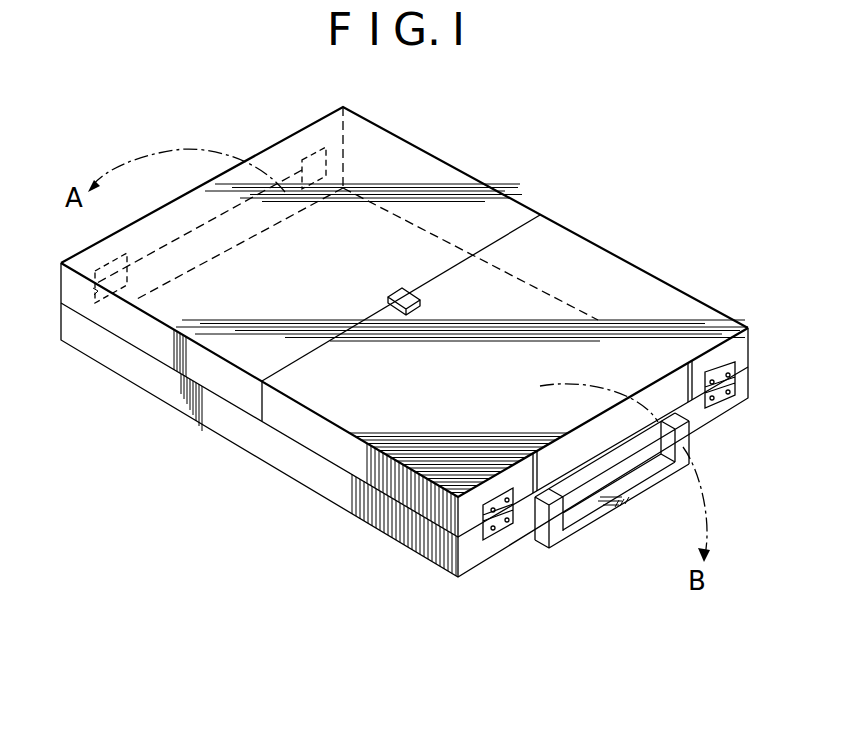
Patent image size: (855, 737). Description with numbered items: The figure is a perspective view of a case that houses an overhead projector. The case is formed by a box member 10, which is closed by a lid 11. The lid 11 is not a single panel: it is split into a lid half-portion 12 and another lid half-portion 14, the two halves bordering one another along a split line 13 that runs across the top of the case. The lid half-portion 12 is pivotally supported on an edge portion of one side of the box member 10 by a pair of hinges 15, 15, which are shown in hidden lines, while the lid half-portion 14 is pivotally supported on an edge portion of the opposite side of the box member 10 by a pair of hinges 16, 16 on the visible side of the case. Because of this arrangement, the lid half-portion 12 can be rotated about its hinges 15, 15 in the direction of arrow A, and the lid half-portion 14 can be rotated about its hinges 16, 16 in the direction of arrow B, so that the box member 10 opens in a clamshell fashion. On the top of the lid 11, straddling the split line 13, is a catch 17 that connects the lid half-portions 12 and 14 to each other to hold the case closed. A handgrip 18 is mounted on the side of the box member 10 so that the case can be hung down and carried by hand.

The box member 10 is at (251, 447).
The lid 11 is at (576, 223).
The lid half-portion 12 is at (433, 178).
The split line 13 is at (518, 223).
The lid half-portion 14 is at (663, 297).
The hinges 15 is at (318, 178).
The hinges 16 is at (503, 525).
The catch 17 is at (418, 299).
The handgrip 18 is at (640, 495).